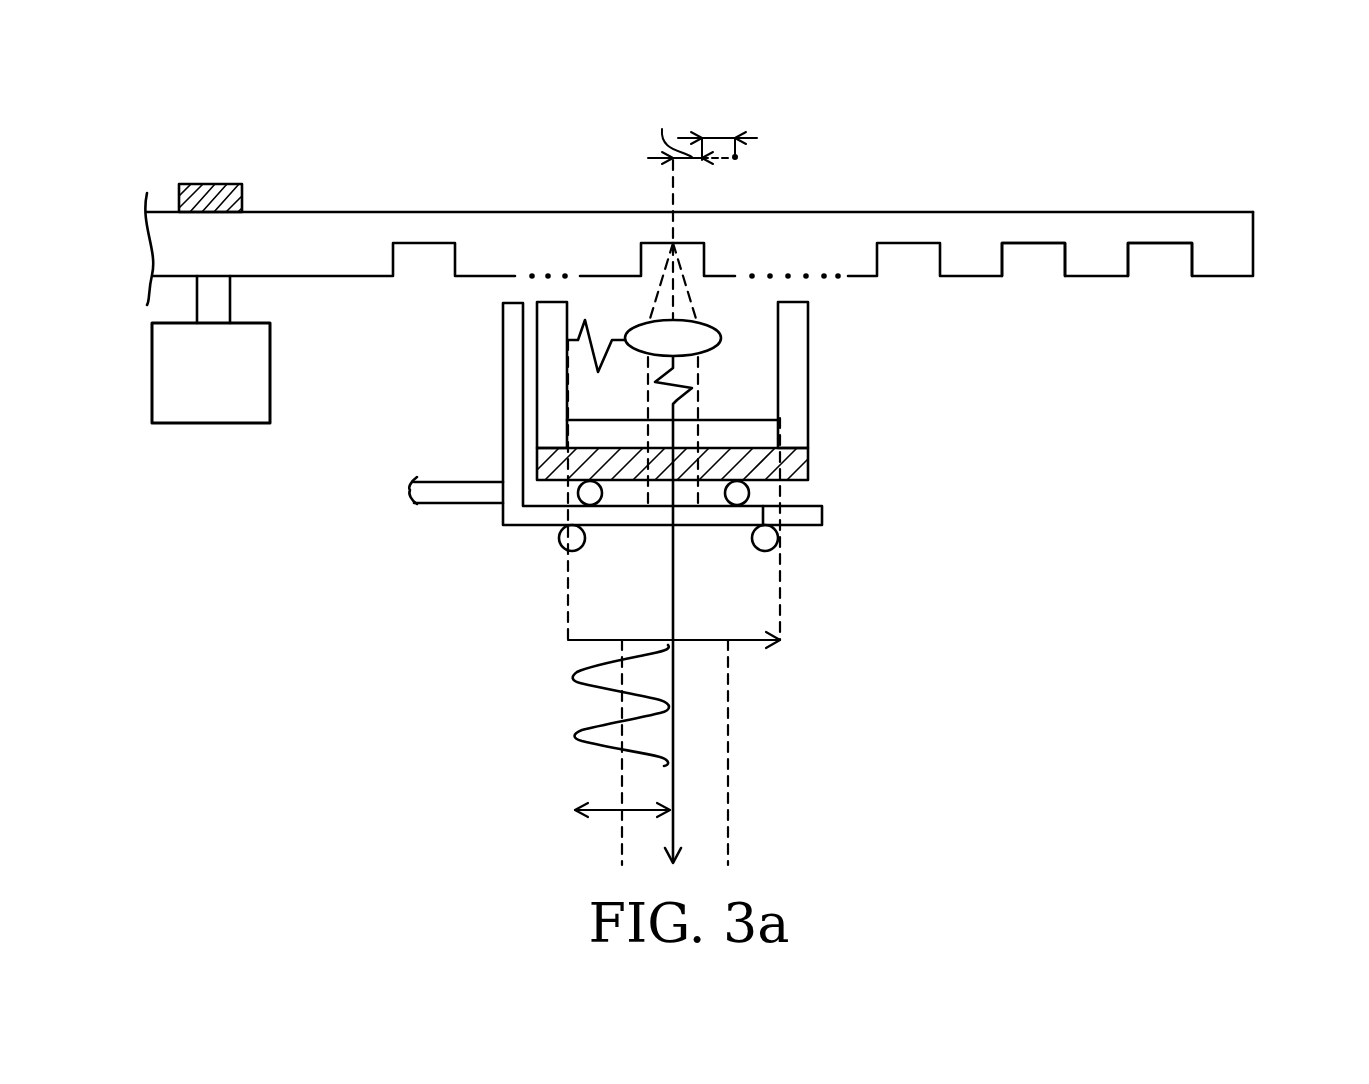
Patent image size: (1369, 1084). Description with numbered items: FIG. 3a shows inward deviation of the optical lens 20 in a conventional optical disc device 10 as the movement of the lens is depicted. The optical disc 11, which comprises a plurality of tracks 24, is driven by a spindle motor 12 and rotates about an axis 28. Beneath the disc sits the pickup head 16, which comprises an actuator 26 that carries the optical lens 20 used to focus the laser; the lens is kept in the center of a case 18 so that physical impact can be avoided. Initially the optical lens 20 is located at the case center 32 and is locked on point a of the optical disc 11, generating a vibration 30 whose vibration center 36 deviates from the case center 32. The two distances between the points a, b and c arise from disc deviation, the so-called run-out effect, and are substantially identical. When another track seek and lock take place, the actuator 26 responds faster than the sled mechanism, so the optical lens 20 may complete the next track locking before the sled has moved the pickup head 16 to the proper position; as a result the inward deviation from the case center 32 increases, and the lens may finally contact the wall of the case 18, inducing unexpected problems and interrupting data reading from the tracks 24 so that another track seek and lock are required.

The optical disc drive system 10 is at (68, 89).
The optical disc 11 is at (1262, 212).
The spindle motor 12 is at (152, 376).
The pickup head 16 is at (825, 507).
The case 18 is at (810, 341).
The optical lens 20 is at (700, 329).
The tracks 24 is at (1035, 288).
The actuator 26 is at (810, 463).
The axis 28 is at (215, 182).
The vibration 30 is at (572, 703).
The case center 32 is at (683, 634).
The vibration center 36 is at (622, 848).